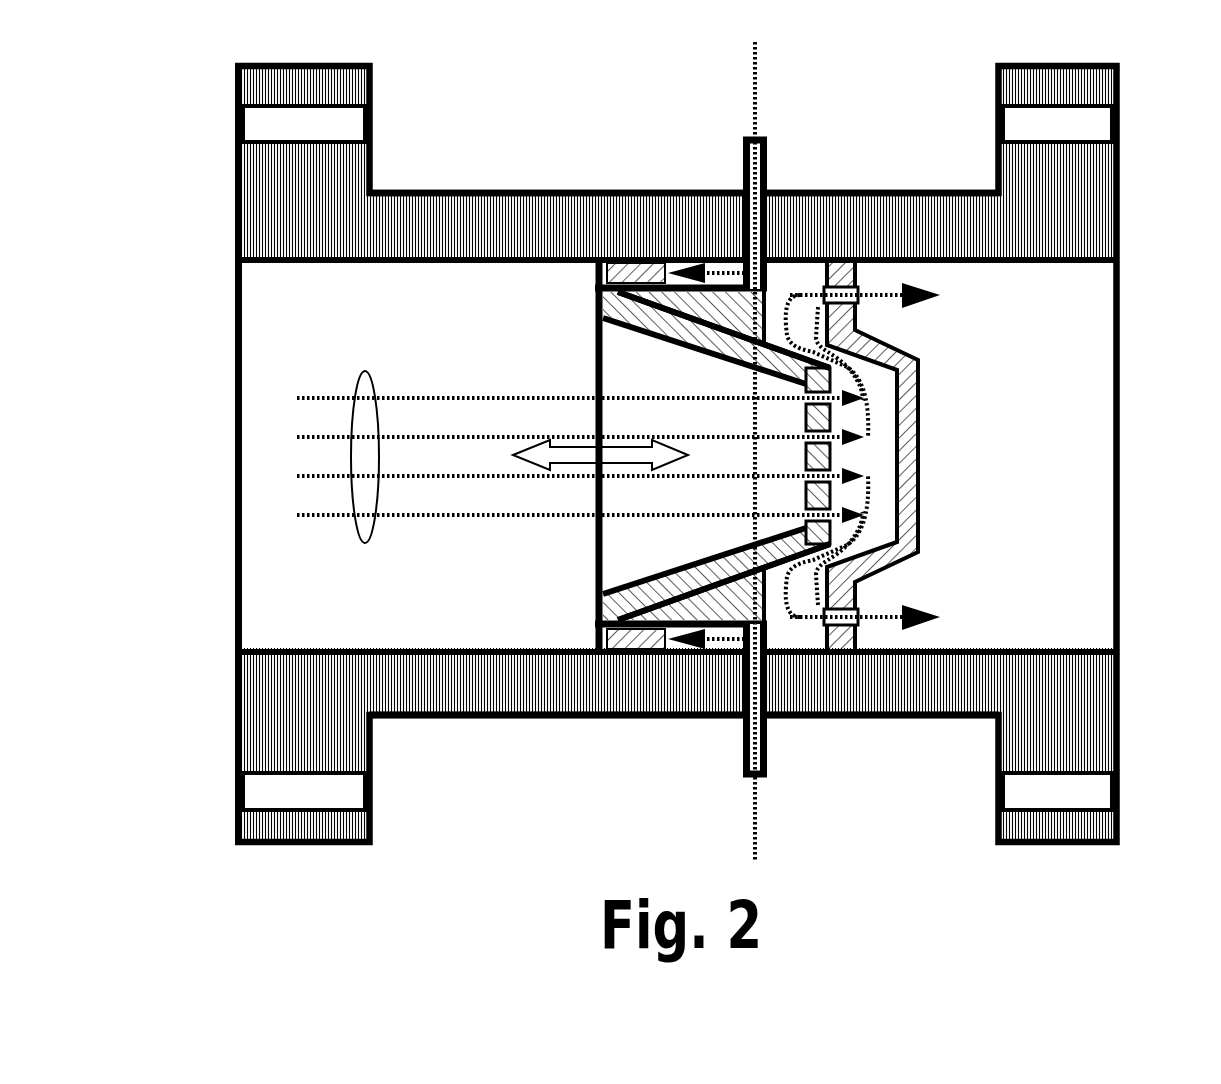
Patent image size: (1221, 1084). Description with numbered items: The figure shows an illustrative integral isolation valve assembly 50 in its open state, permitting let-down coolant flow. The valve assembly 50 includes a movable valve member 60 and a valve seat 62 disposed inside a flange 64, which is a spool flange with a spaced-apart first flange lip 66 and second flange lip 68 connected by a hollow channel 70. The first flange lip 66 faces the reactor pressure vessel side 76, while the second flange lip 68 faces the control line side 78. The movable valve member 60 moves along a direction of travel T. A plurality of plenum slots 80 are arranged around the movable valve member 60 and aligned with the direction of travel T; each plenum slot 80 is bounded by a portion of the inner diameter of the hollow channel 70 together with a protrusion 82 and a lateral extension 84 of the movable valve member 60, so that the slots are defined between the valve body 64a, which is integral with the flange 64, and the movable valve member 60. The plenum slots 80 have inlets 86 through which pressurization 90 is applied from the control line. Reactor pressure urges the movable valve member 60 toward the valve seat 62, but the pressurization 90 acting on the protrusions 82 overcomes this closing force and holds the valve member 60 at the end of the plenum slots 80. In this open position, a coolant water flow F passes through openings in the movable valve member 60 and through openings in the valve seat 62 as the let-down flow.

The valve assembly 50 is at (507, 850).
The movable valve member 60 is at (593, 560).
The valve seat 62 is at (923, 457).
The flange 64 is at (237, 382).
The valve body 64a is at (697, 733).
The first flange lip 66 is at (372, 92).
The second flange lip 68 is at (992, 93).
The hollow channel 70 is at (528, 187).
The reactor pressure vessel side 76 is at (171, 463).
The control line side 78 is at (1206, 477).
The plenum slots 80 is at (725, 257).
The protrusions 82 is at (630, 258).
The lateral extensions 84 is at (723, 317).
The inlets 86 is at (767, 173).
The pressurization 90 is at (757, 95).
The coolant water flow F is at (367, 543).
The direction of travel T is at (543, 437).